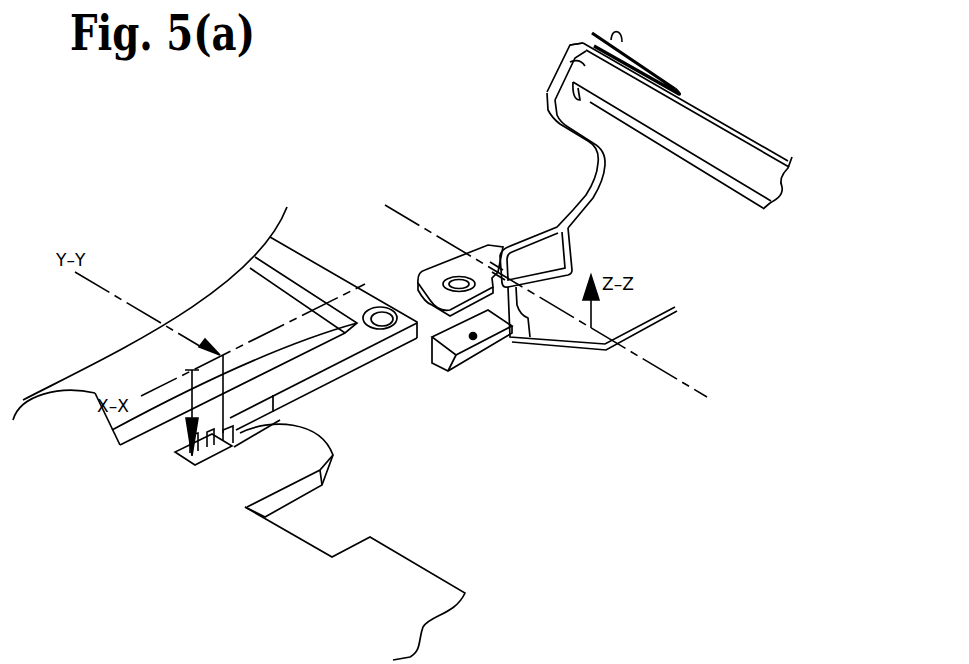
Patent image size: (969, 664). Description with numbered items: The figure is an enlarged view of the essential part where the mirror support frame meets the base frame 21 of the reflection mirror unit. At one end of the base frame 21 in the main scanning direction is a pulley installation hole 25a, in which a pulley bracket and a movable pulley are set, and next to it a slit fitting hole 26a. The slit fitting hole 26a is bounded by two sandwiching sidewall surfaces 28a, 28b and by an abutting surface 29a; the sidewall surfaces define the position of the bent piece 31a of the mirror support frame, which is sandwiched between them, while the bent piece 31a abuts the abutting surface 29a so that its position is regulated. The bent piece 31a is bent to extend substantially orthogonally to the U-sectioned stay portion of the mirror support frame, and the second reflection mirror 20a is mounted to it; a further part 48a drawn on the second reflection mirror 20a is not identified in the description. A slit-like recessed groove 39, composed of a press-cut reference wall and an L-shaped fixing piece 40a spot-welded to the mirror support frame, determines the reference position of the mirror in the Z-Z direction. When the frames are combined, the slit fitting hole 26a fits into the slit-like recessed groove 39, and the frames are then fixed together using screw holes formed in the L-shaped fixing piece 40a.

The second reflection mirror 20a is at (692, 137).
The contact spring 48a is at (641, 58).
The bent piece 31a is at (593, 167).
The L-shaped fixing piece 40a is at (478, 252).
The slit-like recessed groove 39 is at (512, 290).
The pulley installation hole 25a is at (80, 400).
The slit fitting hole 26a is at (292, 415).
The sandwiching sidewall surface 28a is at (250, 430).
The abutting surface 29a is at (180, 458).
The sandwiching sidewall surface 28b is at (258, 433).
The base frame 21 is at (373, 563).